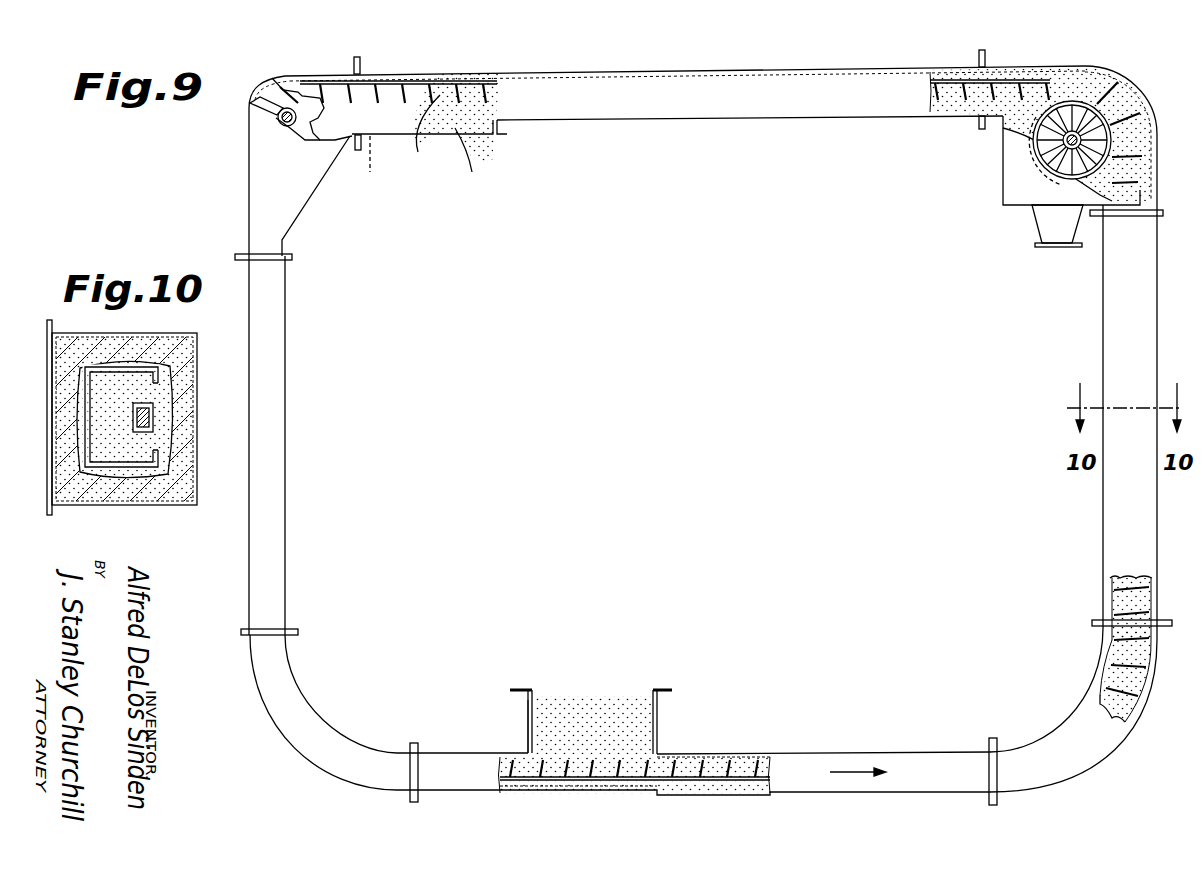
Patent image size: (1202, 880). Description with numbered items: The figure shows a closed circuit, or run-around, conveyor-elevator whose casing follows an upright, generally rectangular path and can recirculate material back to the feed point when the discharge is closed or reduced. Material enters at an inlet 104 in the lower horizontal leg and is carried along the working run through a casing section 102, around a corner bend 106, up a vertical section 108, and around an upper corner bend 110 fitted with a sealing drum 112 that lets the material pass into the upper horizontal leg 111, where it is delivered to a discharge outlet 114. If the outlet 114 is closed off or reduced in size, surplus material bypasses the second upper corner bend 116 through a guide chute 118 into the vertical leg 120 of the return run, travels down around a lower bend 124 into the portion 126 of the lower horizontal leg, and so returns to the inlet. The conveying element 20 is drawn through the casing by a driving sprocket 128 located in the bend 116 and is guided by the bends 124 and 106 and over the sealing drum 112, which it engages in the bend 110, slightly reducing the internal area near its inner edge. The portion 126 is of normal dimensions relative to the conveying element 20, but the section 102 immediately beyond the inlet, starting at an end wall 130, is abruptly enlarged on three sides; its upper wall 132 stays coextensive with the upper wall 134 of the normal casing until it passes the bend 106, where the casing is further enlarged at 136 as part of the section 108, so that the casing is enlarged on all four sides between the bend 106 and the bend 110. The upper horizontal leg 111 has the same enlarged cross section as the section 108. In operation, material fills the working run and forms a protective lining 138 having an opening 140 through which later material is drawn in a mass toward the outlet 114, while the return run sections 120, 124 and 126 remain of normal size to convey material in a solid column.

In FIG. 9, the conveying element 20 is at (565, 782).
In FIG. 9, the casing section 102 is at (702, 783).
In FIG. 9, the inlet 104 is at (645, 720).
In FIG. 9, the corner bend 106 is at (1078, 754).
In FIG. 9, the vertical section 108 is at (1124, 526).
In FIG. 9, the upper corner bend 110 is at (1172, 78).
In FIG. 9, the upper horizontal leg 111 is at (886, 72).
In FIG. 9, the sealing drum 112 is at (1110, 52).
In FIG. 9, the discharge outlet 114 is at (468, 152).
In FIG. 9, the second upper corner bend 116 is at (262, 98).
In FIG. 9, the guide chute 118 is at (320, 187).
In FIG. 9, the vertical leg of return run 120 is at (288, 443).
In FIG. 9, the lower bend 124 is at (292, 740).
In FIG. 9, the portion of lower horizontal leg 126 is at (448, 755).
In FIG. 9, the driving sprocket 128 is at (318, 60).
In FIG. 9, the end wall 130 is at (660, 738).
In FIG. 9, the upper wall 132 is at (742, 756).
In FIG. 9, the upper wall of normal size casing 134 is at (515, 750).
In FIG. 9, the further enlarged casing portion 136 is at (1106, 600).
In FIG. 9, the protective lining 138 is at (1110, 656).
In FIG. 10, the protective lining 138 is at (188, 478).
In FIG. 10, the opening 140 is at (172, 393).